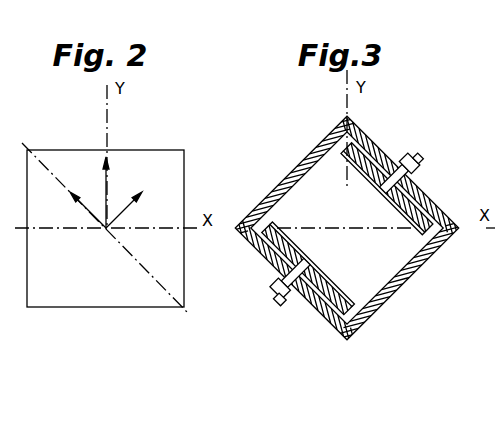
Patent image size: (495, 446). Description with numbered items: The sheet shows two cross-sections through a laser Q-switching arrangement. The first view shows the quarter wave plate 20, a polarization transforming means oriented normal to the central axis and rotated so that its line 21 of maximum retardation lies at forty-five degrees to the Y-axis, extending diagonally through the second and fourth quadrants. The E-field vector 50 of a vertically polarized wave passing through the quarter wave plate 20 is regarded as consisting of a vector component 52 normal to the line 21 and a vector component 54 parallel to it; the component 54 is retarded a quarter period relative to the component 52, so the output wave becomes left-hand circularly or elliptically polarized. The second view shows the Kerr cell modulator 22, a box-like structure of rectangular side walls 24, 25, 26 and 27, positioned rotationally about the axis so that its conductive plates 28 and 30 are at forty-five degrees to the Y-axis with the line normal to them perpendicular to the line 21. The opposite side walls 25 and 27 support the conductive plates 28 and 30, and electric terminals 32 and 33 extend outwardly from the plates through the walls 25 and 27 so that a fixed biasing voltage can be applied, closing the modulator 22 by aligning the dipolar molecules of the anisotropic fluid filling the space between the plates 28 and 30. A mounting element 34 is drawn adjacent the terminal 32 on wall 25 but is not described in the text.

In FIG. 2, the quarter wave plate 20 is at (135, 150).
In FIG. 2, the line of maximum retardation 21 is at (145, 267).
In FIG. 2, the E-field vector 50 is at (110, 177).
In FIG. 2, the vector component 52 is at (123, 213).
In FIG. 2, the vector component 54 is at (90, 213).
In FIG. 3, the Kerr cell modulator 22 is at (317, 124).
In FIG. 3, the side wall 24 is at (418, 265).
In FIG. 3, the side wall 25 is at (436, 200).
In FIG. 3, the side wall 26 is at (308, 160).
In FIG. 3, the side wall 27 is at (263, 253).
In FIG. 3, the conductive plate 28 is at (407, 212).
In FIG. 3, the conductive plate 30 is at (315, 277).
In FIG. 3, the electric terminal 32 is at (418, 157).
In FIG. 3, the electric terminal 33 is at (282, 297).
In FIG. 3, the mounting bolt 34 is at (404, 154).